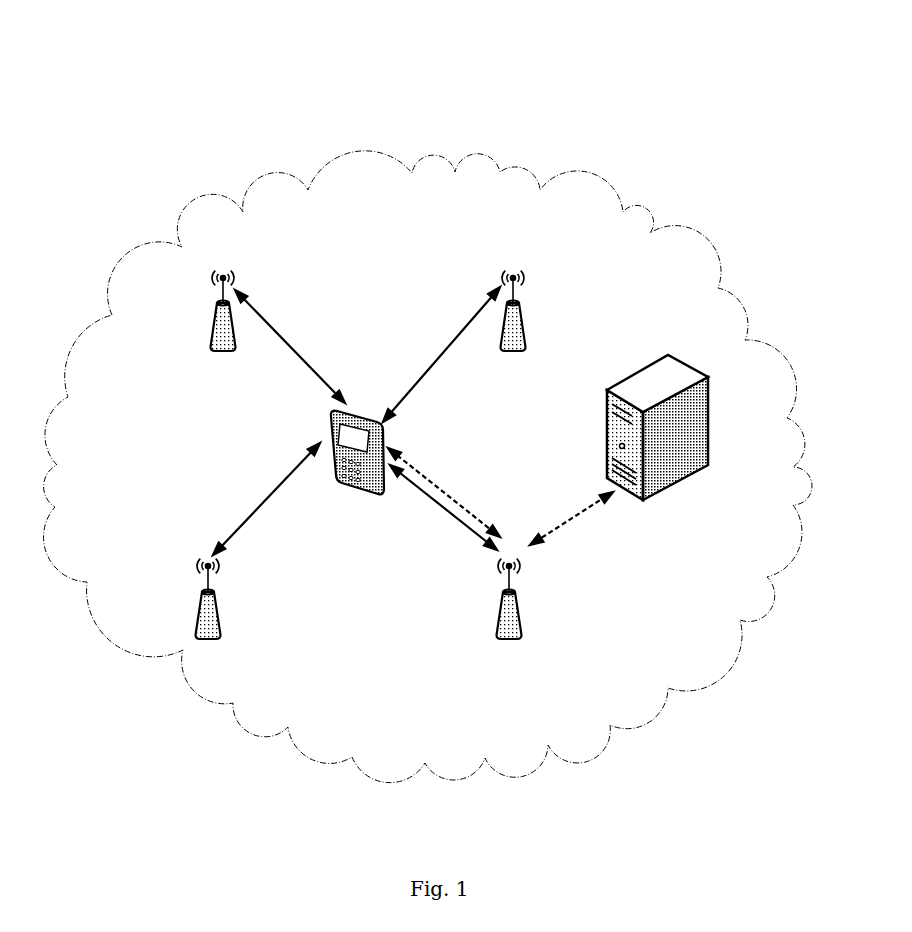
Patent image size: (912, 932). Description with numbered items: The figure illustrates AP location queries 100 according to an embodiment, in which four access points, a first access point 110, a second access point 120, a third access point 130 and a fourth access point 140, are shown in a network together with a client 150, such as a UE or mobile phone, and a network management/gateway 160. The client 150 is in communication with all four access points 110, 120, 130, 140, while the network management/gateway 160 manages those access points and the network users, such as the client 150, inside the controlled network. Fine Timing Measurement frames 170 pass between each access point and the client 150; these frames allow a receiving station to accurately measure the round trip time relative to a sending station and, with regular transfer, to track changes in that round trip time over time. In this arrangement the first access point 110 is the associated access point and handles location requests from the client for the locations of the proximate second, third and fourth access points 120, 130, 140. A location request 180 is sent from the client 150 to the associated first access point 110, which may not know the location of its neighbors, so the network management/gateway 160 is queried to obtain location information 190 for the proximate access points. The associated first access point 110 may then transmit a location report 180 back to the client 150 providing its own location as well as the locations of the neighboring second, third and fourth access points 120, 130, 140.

The AP location queries 100 is at (170, 153).
The AP1 110 is at (535, 657).
The AP2 120 is at (240, 631).
The AP3 130 is at (242, 367).
The AP4 140 is at (492, 367).
The client 150 is at (362, 493).
The network management/gateway 160 is at (693, 480).
The Fine Timing Measurement frames 170 is at (284, 336).
The location request / location report 180 is at (438, 483).
The location information 190 is at (560, 528).